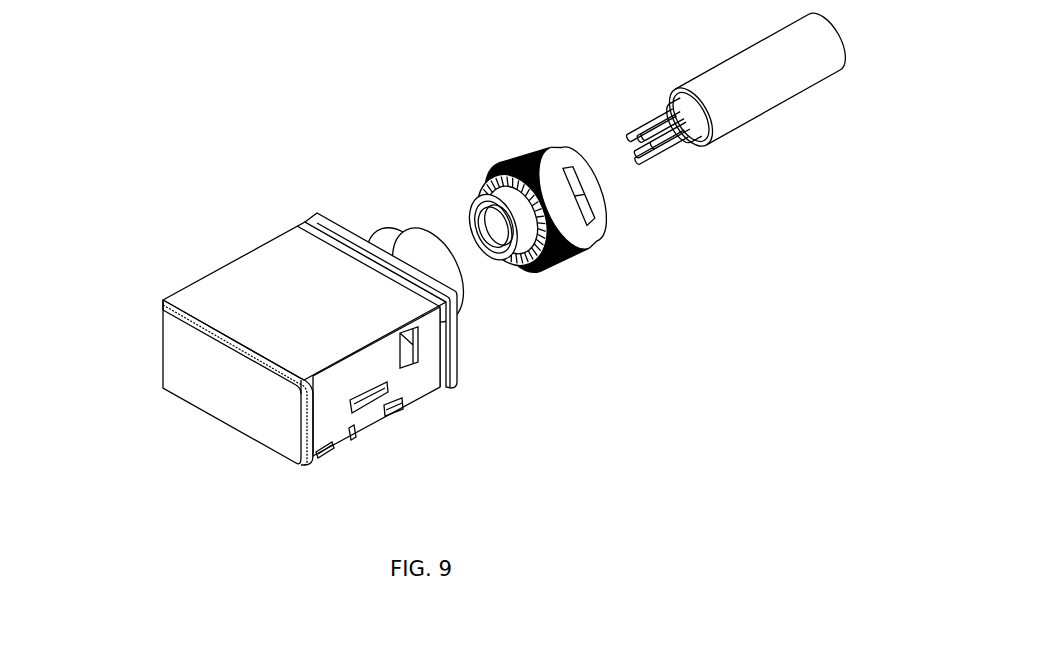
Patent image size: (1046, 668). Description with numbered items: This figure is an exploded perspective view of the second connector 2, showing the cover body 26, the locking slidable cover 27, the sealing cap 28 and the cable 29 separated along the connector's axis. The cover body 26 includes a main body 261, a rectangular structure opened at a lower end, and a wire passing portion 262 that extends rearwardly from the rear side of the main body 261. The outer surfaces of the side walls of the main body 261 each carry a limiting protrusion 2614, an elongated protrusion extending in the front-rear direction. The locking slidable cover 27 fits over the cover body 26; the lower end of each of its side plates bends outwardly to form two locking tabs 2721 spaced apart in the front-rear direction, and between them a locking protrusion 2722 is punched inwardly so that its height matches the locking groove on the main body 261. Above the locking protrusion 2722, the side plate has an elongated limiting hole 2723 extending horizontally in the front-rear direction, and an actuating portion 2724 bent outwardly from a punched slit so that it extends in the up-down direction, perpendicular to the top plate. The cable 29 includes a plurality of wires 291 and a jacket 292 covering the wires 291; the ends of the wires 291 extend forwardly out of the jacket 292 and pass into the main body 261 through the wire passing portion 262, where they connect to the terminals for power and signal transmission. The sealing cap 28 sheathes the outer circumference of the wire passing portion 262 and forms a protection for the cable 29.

The second connector 2 is at (160, 50).
The cover body 26 is at (215, 400).
The main body 261 is at (175, 372).
The wire passing portion 262 is at (397, 247).
The limiting protrusion 2614 is at (371, 404).
The locking slidable cover 27 is at (270, 260).
The locking tab 2721 is at (331, 443).
The locking protrusion 2722 is at (355, 437).
The limiting hole 2723 is at (383, 383).
The actuating portion 2724 is at (410, 356).
The sealing cap 28 is at (500, 153).
The cable 29 is at (728, 52).
The wires 291 is at (675, 142).
The jacket 292 is at (758, 98).